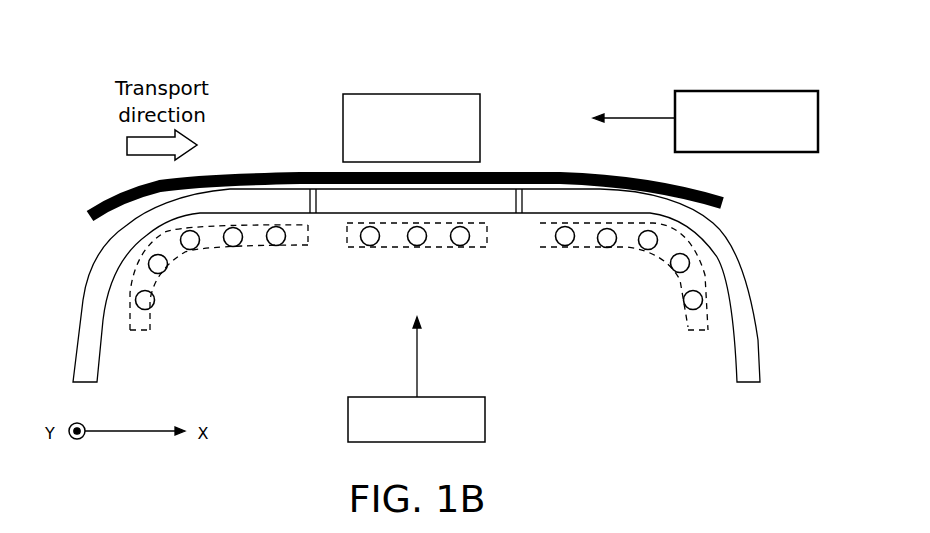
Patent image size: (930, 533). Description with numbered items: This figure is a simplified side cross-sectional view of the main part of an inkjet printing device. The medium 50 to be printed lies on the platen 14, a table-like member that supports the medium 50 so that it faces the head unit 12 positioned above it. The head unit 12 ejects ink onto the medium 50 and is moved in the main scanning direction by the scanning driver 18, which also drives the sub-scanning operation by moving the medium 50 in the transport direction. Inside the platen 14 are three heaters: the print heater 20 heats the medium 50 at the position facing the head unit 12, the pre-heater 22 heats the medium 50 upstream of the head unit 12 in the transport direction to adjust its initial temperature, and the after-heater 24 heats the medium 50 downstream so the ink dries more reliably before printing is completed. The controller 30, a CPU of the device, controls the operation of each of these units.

The head unit 12 is at (480, 110).
The platen 14 is at (503, 207).
The scanning driver 18 is at (745, 90).
The print heater 20 is at (357, 247).
The pre-heater 22 is at (150, 325).
The after-heater 24 is at (692, 335).
The controller 30 is at (348, 430).
The medium 50 is at (242, 176).